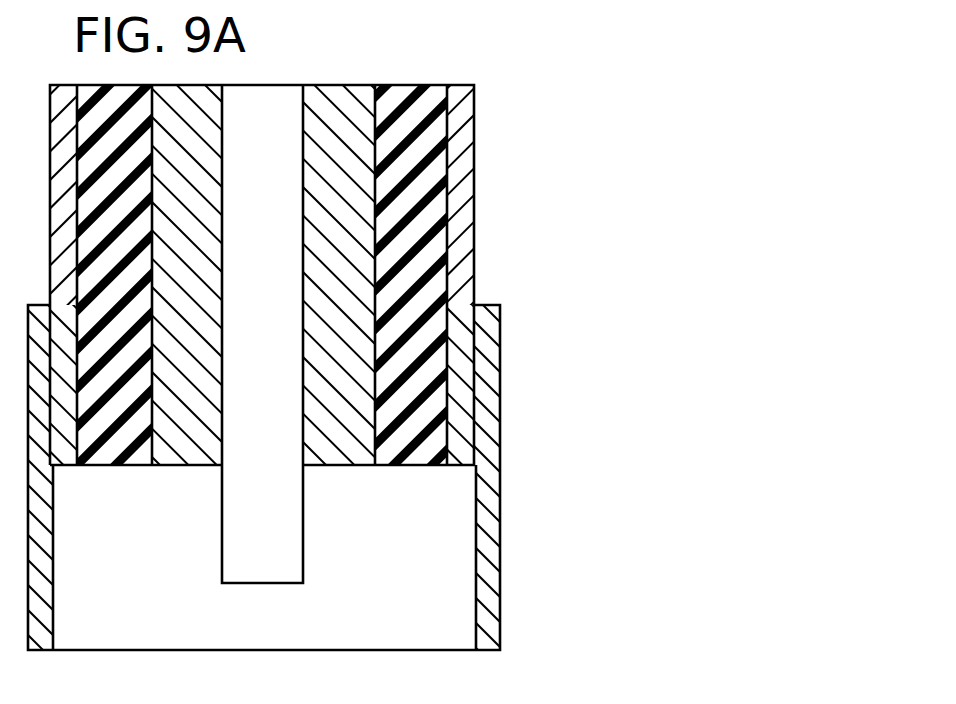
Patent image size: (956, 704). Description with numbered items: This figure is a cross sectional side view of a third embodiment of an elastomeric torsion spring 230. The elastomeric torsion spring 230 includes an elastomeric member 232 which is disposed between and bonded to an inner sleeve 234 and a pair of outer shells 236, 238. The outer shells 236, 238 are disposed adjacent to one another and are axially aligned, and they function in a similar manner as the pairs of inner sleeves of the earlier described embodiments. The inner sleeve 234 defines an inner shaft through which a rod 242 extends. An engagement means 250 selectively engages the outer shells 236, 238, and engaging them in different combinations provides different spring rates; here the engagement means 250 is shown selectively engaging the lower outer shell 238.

The elastomeric torsion spring 230 is at (423, 62).
The elastomeric member 232 is at (410, 233).
The inner sleeve 234 is at (343, 453).
The outer shell 236 is at (462, 149).
The lower outer shell 238 is at (462, 388).
The rod 242 is at (293, 560).
The engagement means 250 is at (492, 568).